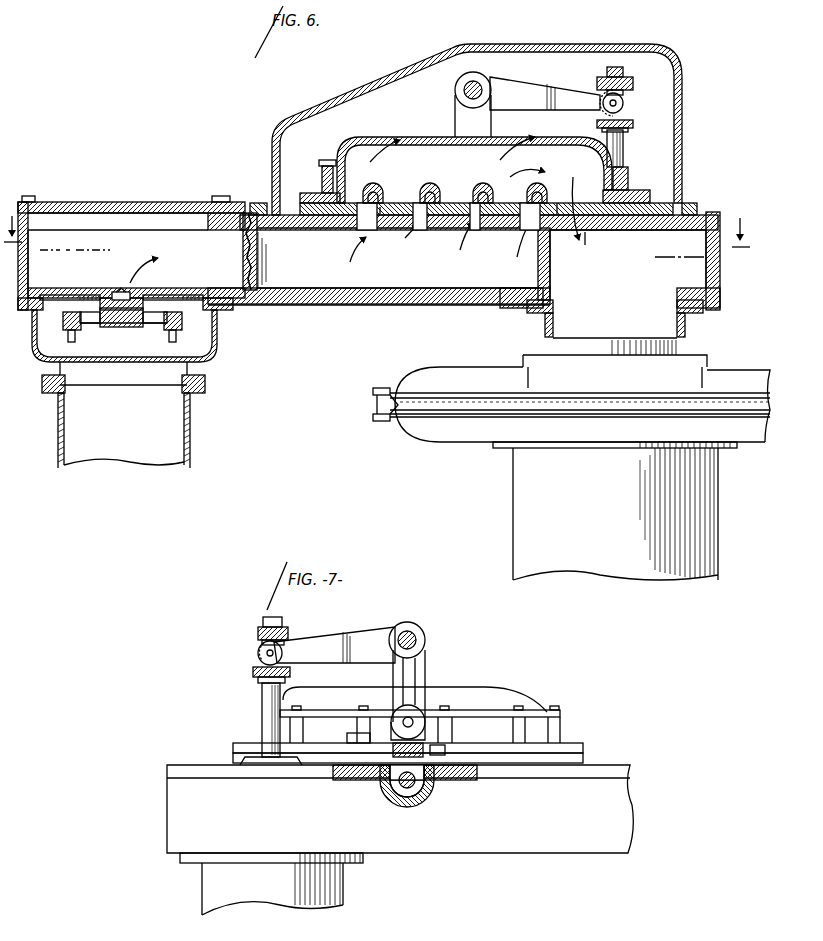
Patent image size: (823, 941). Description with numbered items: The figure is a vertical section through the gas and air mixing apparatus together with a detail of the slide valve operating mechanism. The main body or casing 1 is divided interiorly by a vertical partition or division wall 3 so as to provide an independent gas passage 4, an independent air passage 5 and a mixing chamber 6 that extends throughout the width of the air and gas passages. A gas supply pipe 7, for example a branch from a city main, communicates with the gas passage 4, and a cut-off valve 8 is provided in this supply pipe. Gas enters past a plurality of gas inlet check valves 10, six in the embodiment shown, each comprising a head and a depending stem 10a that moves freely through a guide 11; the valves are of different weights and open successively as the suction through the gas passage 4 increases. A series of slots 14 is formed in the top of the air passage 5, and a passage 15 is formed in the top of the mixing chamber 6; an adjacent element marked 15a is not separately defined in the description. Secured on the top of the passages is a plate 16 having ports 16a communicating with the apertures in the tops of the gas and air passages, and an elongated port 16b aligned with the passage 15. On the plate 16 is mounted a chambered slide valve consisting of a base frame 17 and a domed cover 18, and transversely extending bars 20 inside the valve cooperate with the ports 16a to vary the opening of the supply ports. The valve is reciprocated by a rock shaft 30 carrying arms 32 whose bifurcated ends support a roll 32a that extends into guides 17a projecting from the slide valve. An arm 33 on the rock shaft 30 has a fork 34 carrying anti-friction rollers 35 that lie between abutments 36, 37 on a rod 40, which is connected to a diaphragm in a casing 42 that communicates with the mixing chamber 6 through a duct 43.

In FIG. 6, the main body or casing 1 is at (309, 299).
In FIG. 7, the main body or casing 1 is at (183, 827).
In FIG. 6, the partition or division wall 3 is at (549, 268).
In FIG. 6, the gas passage 4 is at (128, 259).
In FIG. 6, the air passage 5 is at (397, 255).
In FIG. 6, the mixing chamber 6 is at (628, 260).
In FIG. 6, the gas supply pipe 7 is at (72, 445).
In FIG. 6, the cut-off valve 8 is at (381, 246).
In FIG. 6, the gas inlet check valve 10 is at (173, 297).
In FIG. 6, the depending stem 10a is at (187, 322).
In FIG. 6, the guide 11 is at (168, 330).
In FIG. 6, the slots 14 is at (538, 232).
In FIG. 6, the passage 15 is at (592, 227).
In FIG. 6, the passage 15a is at (396, 203).
In FIG. 6, the plate 16 is at (650, 207).
In FIG. 7, the plate 16 is at (575, 760).
In FIG. 6, the ports 16a is at (543, 191).
In FIG. 6, the elongated port 16b is at (590, 208).
In FIG. 6, the base frame 17 is at (627, 187).
In FIG. 7, the base frame 17 is at (560, 747).
In FIG. 7, the guides 17a is at (448, 783).
In FIG. 6, the domed cover 18 is at (407, 142).
In FIG. 7, the domed cover 18 is at (507, 697).
In FIG. 6, the transversely extending bars 20 is at (478, 198).
In FIG. 6, the rock shaft 30 is at (473, 86).
In FIG. 7, the rock shaft 30 is at (420, 640).
In FIG. 7, the arms 32 is at (425, 668).
In FIG. 7, the roll 32a is at (433, 717).
In FIG. 6, the arm 33 is at (528, 90).
In FIG. 7, the arm 33 is at (357, 638).
In FIG. 6, the fork 34 is at (600, 108).
In FIG. 7, the fork 34 is at (268, 655).
In FIG. 6, the anti-friction roller 35 is at (625, 104).
In FIG. 7, the anti-friction roller 35 is at (258, 650).
In FIG. 6, the abutment 36 is at (633, 125).
In FIG. 7, the abutment 36 is at (255, 672).
In FIG. 6, the abutment 37 is at (630, 85).
In FIG. 7, the abutment 37 is at (262, 632).
In FIG. 6, the rod or link 40 is at (623, 147).
In FIG. 7, the rod or link 40 is at (262, 700).
In FIG. 6, the casing 42 is at (488, 373).
In FIG. 6, the duct 43 is at (670, 325).
In FIG. 7, the duct 43 is at (210, 883).